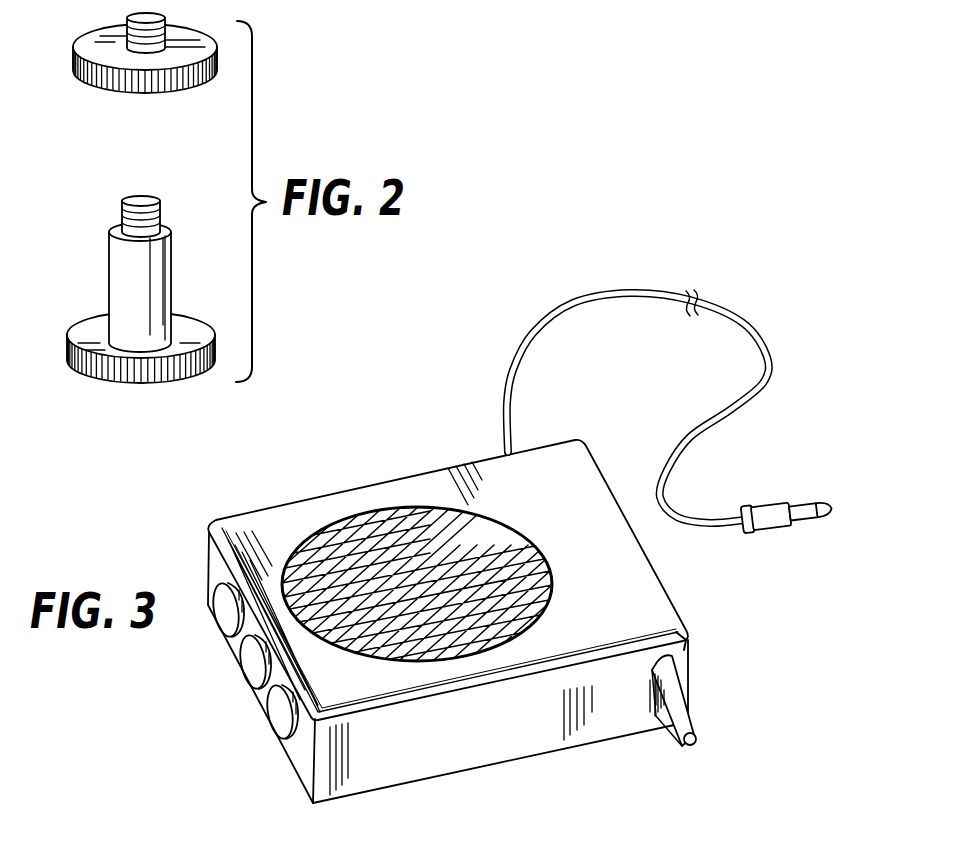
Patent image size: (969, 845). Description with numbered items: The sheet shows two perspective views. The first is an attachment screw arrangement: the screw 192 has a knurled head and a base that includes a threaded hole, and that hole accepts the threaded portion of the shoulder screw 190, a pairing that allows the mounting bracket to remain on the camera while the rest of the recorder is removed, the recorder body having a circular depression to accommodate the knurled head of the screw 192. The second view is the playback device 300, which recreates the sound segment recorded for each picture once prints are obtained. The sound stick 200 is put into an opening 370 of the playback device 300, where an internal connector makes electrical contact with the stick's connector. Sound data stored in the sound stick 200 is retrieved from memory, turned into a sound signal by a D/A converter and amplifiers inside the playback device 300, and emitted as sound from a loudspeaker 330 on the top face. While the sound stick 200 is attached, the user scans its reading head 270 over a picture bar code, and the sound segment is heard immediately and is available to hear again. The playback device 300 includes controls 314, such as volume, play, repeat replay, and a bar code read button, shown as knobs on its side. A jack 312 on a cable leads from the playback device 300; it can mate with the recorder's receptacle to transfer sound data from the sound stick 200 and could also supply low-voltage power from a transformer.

In FIG. 2, the shoulder screw 190 is at (123, 263).
In FIG. 2, the screw 192 is at (98, 77).
In FIG. 3, the sound stick 200 is at (673, 682).
In FIG. 3, the reading head 270 is at (698, 740).
In FIG. 3, the playback device 300 is at (423, 492).
In FIG. 3, the jack 312 is at (767, 507).
In FIG. 3, the controls 314 is at (271, 710).
In FIG. 3, the loudspeaker 330 is at (484, 532).
In FIG. 3, the opening 370 is at (684, 640).